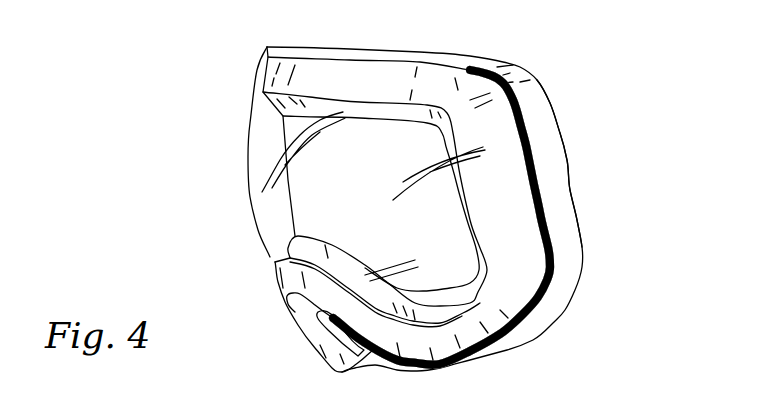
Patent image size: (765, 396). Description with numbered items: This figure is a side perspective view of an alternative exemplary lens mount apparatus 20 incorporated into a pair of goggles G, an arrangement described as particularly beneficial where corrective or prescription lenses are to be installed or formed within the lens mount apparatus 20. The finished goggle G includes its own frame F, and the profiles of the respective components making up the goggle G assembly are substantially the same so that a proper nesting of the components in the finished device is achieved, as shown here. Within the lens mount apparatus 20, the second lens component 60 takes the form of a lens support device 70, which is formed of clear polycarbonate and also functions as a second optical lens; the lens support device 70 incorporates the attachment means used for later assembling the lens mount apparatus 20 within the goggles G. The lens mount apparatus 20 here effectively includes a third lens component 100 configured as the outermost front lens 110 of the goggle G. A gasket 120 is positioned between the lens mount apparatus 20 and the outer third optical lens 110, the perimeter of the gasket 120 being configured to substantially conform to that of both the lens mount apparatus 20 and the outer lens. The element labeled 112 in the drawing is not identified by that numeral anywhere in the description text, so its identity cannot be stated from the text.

The lens mount apparatus 20 is at (168, 167).
The second lens component 60 is at (274, 218).
The lens support device 70 is at (300, 182).
The third lens component 100 is at (218, 252).
The outermost front lens 110 is at (236, 274).
The channel cavity 112 is at (268, 277).
The gasket 120 is at (506, 258).
The goggle G is at (530, 34).
The frame F is at (576, 114).